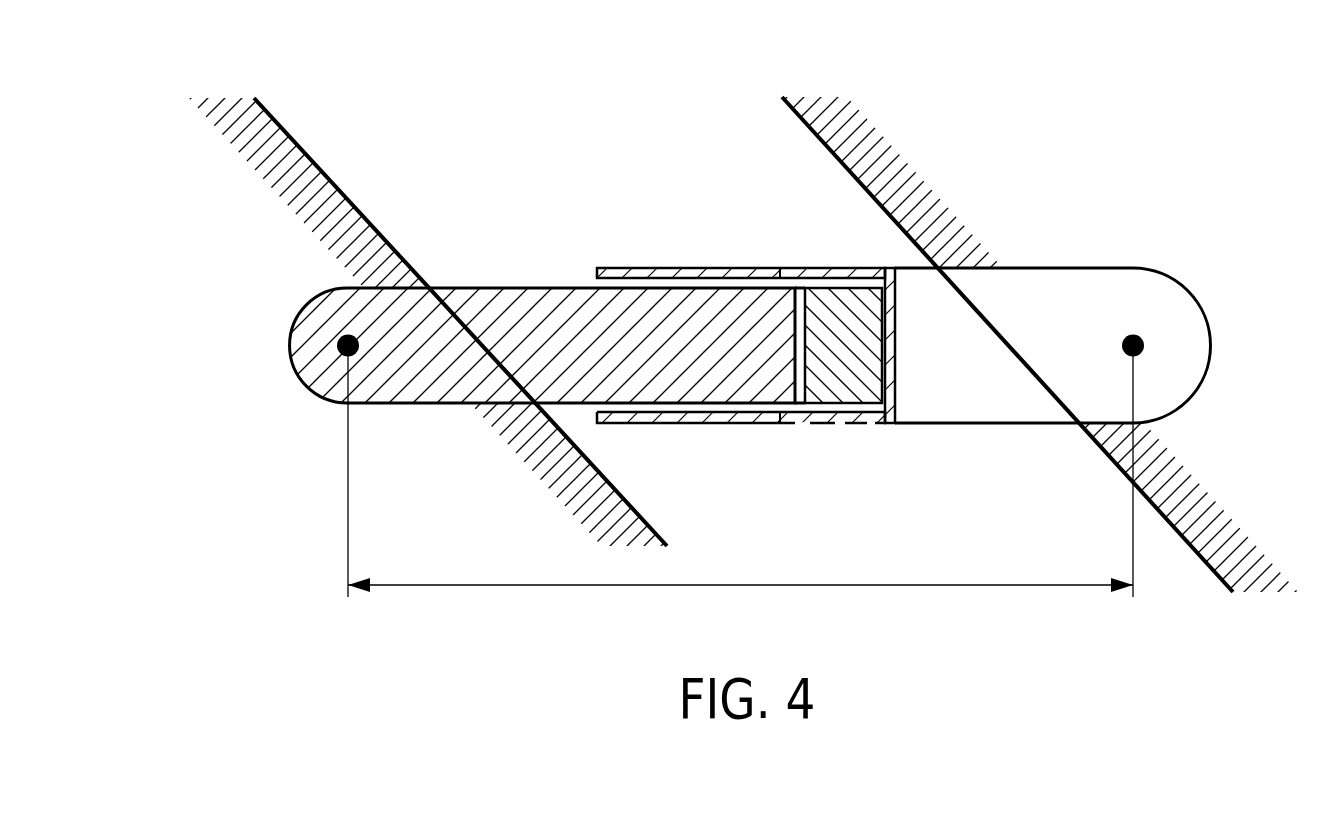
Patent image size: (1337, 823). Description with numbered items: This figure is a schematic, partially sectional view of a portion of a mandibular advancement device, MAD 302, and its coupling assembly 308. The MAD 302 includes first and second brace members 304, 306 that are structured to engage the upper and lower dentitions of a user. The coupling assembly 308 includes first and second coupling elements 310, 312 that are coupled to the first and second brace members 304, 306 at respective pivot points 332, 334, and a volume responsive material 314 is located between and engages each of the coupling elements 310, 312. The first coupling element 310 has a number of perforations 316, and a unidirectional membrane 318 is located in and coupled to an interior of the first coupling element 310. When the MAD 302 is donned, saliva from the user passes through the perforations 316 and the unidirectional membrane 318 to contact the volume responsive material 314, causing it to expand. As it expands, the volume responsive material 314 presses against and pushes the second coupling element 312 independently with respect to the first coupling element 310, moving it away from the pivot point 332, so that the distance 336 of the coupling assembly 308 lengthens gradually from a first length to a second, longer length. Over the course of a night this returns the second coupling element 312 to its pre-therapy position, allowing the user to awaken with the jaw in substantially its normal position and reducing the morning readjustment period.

The mandibular advancement device 302 is at (500, 114).
The first brace member 304 is at (1200, 540).
The second brace member 306 is at (327, 198).
The coupling assembly 308 is at (775, 326).
The first coupling element 310 is at (682, 418).
The second coupling element 312 is at (497, 310).
The volume responsive material 314 is at (842, 315).
The perforations 316 is at (805, 424).
The unidirectional membrane 318 is at (850, 408).
The pivot point 332 is at (1145, 345).
The pivot point 334 is at (337, 343).
The distance 336 is at (757, 585).